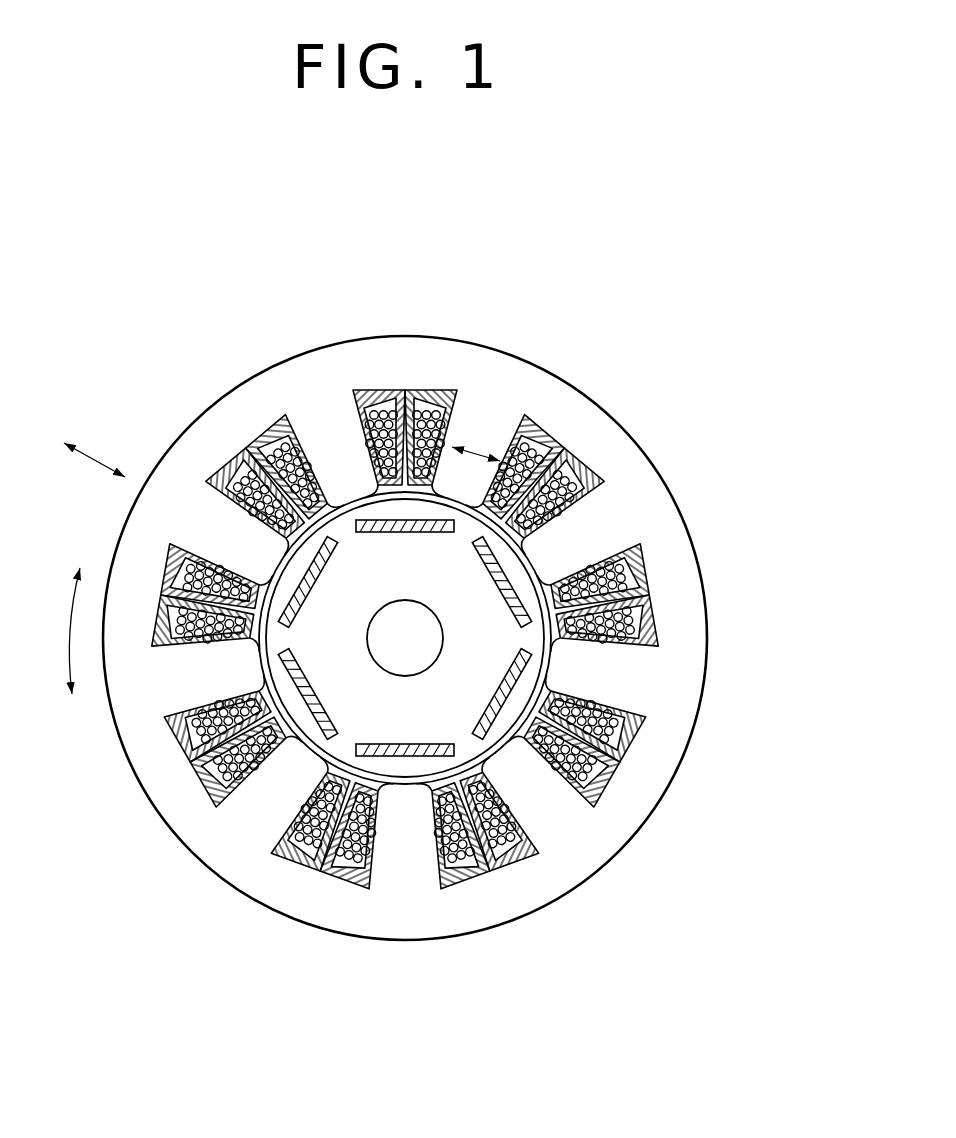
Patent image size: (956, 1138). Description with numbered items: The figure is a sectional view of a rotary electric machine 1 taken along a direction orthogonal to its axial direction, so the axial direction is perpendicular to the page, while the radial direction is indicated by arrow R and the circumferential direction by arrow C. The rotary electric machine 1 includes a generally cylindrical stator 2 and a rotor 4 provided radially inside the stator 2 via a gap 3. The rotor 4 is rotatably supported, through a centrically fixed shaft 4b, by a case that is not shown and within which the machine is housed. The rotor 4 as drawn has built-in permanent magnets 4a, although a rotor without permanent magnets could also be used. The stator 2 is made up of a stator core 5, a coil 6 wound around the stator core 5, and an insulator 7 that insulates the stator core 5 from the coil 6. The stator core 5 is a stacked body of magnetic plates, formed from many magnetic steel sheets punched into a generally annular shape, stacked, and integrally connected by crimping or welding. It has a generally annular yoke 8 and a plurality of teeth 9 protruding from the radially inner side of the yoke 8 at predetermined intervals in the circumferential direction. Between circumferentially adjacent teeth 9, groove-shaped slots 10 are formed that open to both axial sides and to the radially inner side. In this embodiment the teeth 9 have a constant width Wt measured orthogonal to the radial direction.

The rotary electric machine 1 is at (586, 368).
The stator 2 is at (614, 412).
The gap 3 is at (540, 698).
The rotor 4 is at (532, 563).
The permanent magnets 4a is at (490, 573).
The shaft 4b is at (405, 678).
The stator core 5 is at (278, 318).
The coil 6 is at (250, 470).
The insulator 7 is at (257, 433).
The yoke 8 is at (396, 388).
The teeth 9 is at (340, 460).
The slots 10 is at (407, 430).